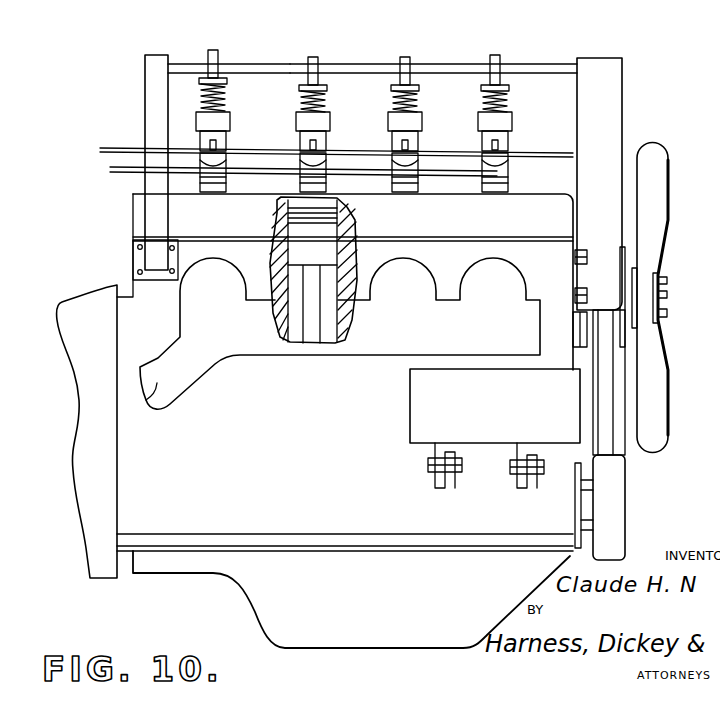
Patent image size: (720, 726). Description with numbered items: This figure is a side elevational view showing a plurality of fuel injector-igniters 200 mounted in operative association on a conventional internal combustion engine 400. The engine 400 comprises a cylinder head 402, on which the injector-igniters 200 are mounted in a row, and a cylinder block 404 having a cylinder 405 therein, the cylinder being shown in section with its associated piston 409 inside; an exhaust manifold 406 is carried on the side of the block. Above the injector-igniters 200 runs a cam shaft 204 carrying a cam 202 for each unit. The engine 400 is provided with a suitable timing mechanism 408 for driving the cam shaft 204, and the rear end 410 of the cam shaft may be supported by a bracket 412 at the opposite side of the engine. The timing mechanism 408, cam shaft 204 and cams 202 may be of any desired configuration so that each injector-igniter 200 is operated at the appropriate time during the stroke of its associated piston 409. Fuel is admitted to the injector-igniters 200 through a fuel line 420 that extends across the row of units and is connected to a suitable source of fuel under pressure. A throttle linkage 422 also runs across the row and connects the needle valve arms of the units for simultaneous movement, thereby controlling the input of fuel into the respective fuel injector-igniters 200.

The fuel injector-igniter 200 is at (283, 121).
The cam 202 is at (216, 50).
The cam shaft 204 is at (281, 63).
The internal combustion engine 400 is at (662, 74).
The cylinder head 402 is at (537, 200).
The cylinder block 404 is at (552, 512).
The cylinder 405 is at (330, 313).
The exhaust manifold 406 is at (172, 400).
The timing mechanism 408 is at (602, 125).
The piston 409 is at (338, 220).
The rear end 410 is at (196, 32).
The bracket 412 is at (157, 85).
The fuel line 420 is at (118, 173).
The throttle linkage 422 is at (105, 148).